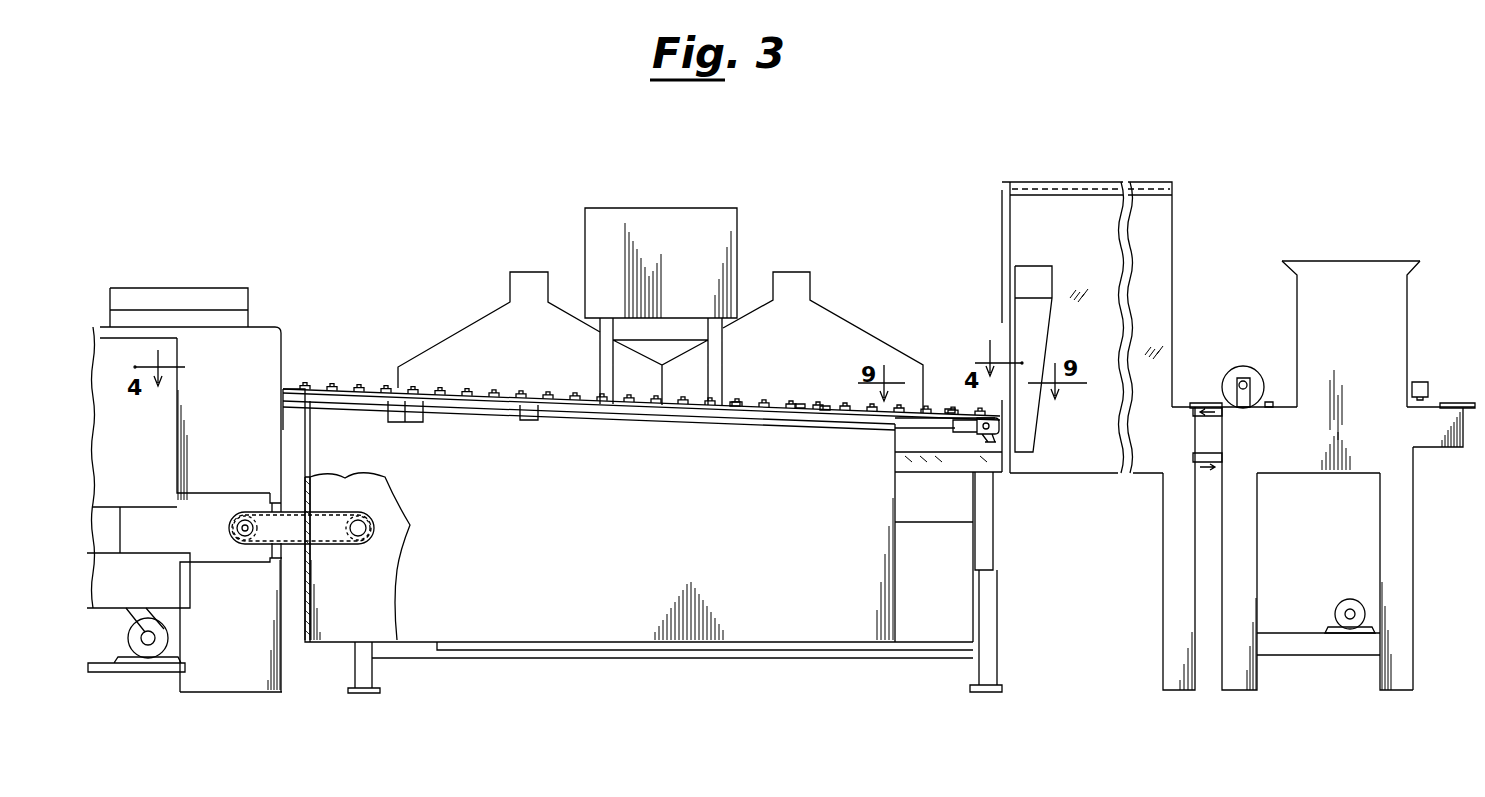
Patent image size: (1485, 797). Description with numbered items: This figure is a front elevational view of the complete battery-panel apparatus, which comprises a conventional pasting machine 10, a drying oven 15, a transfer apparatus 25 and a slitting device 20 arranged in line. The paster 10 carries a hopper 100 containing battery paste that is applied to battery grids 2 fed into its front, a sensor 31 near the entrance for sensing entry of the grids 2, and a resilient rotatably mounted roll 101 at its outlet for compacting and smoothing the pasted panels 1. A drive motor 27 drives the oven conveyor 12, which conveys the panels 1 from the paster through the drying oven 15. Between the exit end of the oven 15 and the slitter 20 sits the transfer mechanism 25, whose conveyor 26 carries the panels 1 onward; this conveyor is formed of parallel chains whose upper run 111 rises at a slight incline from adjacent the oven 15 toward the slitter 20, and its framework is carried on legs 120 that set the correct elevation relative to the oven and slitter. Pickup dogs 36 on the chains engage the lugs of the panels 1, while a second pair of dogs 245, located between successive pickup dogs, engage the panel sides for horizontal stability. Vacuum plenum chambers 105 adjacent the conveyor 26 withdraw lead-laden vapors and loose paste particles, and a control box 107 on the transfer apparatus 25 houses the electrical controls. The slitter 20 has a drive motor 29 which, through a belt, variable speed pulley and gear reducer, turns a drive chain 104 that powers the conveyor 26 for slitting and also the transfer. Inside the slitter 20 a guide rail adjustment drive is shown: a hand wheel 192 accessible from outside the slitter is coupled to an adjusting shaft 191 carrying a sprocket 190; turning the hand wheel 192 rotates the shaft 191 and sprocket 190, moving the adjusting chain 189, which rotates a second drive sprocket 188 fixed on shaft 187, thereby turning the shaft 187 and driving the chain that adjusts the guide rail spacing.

The pasted panels 1 is at (736, 405).
The battery grids 2 is at (1455, 403).
The pasting machine 10 is at (1354, 282).
The oven conveyor 12 is at (1210, 455).
The drying oven 15 is at (1103, 176).
The slitting device 20 is at (290, 302).
The transfer apparatus 25 is at (370, 367).
The conveyor 26 is at (288, 388).
The drive motor 27 is at (1353, 598).
The drive motor 29 is at (150, 660).
The sensor 31 is at (1422, 380).
The pickup dogs 36 is at (800, 405).
The hopper 100 is at (1383, 318).
The roll 101 is at (1240, 366).
The drive chain 104 is at (128, 615).
The vacuum plenum chambers 105 is at (800, 284).
The control box 107 is at (651, 208).
The upper run 111 is at (494, 392).
The legs 120 is at (365, 672).
The shaft 187 is at (368, 520).
The second drive sprocket 188 is at (373, 532).
The adjusting chain 189 is at (328, 514).
The sprocket 190 is at (255, 545).
The adjusting shaft 191 is at (240, 527).
The hand wheel 192 is at (228, 540).
The second pair of dogs 245 is at (826, 408).